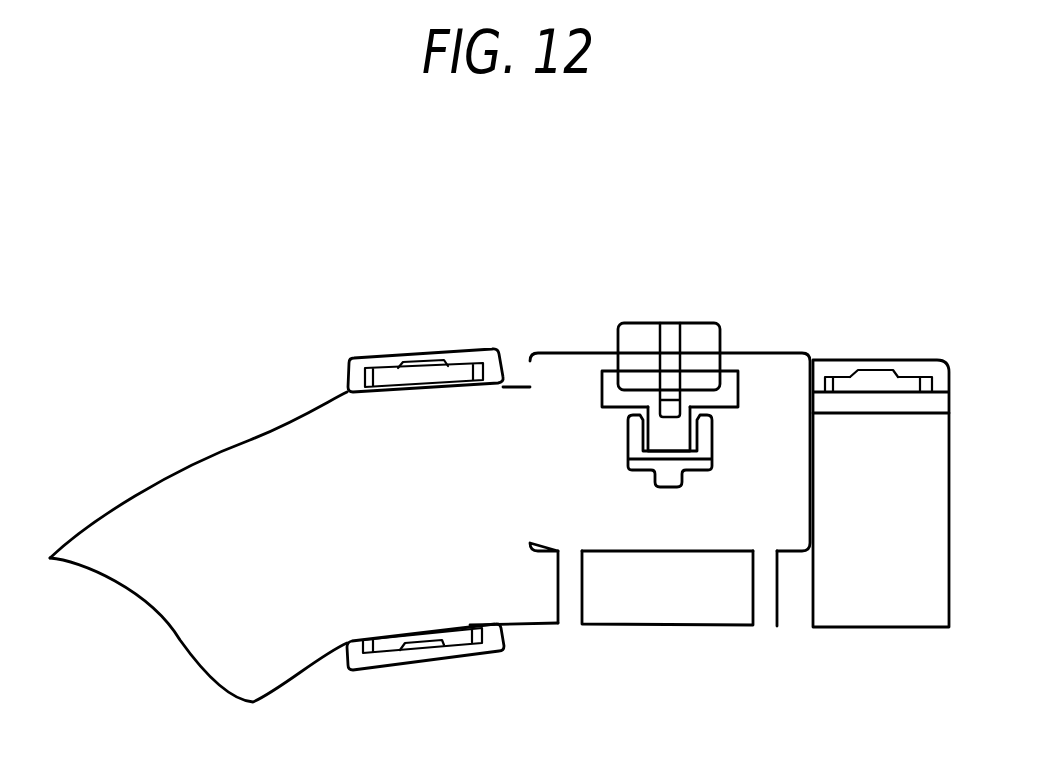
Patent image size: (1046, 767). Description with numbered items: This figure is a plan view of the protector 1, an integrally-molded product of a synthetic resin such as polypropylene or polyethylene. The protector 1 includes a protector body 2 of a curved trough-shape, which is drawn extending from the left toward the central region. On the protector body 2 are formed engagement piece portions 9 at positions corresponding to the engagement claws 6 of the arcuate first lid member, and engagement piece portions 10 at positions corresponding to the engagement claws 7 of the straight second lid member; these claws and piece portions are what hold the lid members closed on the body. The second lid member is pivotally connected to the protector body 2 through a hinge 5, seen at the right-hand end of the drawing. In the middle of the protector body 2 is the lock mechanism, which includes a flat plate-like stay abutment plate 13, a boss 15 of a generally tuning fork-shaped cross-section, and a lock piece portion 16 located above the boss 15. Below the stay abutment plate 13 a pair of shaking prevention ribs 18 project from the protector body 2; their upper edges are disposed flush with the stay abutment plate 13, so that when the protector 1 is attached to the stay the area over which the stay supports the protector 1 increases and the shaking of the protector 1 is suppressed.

The protector 1 is at (887, 250).
The protector body 2 is at (187, 487).
The hinge 5 is at (878, 628).
The engagement claws 6 is at (417, 375).
The engagement claws 7 is at (863, 380).
The engagement piece portions 9 is at (473, 360).
The engagement piece portions 10 is at (910, 368).
The stay abutment plate 13 is at (550, 378).
The boss 15 is at (698, 447).
The lock piece portion 16 is at (638, 343).
The shaking prevention ribs 18 is at (569, 613).